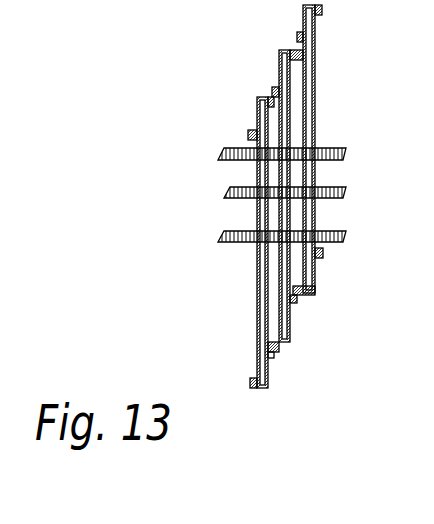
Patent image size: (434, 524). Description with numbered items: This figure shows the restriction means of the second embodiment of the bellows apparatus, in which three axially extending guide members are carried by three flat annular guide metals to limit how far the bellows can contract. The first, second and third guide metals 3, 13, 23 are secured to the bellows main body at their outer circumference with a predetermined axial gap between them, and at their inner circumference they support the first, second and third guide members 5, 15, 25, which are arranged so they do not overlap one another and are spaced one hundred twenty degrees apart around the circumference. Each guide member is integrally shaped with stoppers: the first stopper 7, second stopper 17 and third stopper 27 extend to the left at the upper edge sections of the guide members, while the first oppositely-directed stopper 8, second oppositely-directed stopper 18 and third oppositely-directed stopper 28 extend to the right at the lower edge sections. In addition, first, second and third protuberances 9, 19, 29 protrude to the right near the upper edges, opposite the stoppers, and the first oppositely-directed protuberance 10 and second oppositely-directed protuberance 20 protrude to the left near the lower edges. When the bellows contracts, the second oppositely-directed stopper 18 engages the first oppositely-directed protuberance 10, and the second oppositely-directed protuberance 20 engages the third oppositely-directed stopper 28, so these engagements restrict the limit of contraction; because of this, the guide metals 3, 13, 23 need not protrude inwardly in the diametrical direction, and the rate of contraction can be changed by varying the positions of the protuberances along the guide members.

The first guide metal 3 is at (338, 236).
The first guide member 5 is at (262, 255).
The first stopper 7 is at (271, 99).
The first oppositely-directed stopper 8 is at (250, 381).
The first protuberance 9 is at (252, 136).
The first oppositely-directed protuberance 10 is at (282, 354).
The second guide metal 13 is at (339, 192).
The second guide member 15 is at (283, 163).
The second stopper 17 is at (301, 55).
The second oppositely-directed stopper 18 is at (282, 346).
The second protuberance 19 is at (276, 90).
The second oppositely-directed protuberance 20 is at (324, 253).
The third guide metal 23 is at (332, 151).
The third guide member 25 is at (313, 93).
The third stopper 27 is at (318, 10).
The third oppositely-directed stopper 28 is at (303, 291).
The third protuberance 29 is at (300, 40).